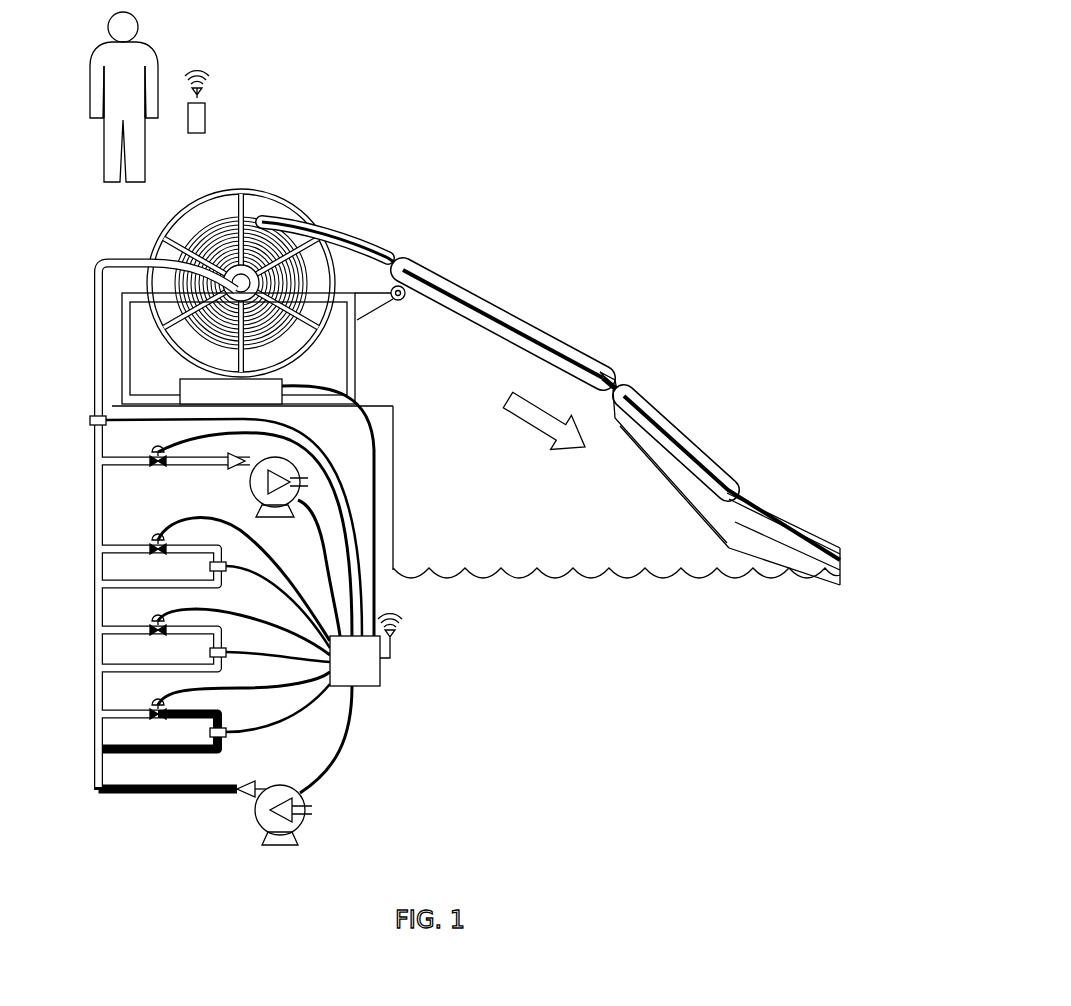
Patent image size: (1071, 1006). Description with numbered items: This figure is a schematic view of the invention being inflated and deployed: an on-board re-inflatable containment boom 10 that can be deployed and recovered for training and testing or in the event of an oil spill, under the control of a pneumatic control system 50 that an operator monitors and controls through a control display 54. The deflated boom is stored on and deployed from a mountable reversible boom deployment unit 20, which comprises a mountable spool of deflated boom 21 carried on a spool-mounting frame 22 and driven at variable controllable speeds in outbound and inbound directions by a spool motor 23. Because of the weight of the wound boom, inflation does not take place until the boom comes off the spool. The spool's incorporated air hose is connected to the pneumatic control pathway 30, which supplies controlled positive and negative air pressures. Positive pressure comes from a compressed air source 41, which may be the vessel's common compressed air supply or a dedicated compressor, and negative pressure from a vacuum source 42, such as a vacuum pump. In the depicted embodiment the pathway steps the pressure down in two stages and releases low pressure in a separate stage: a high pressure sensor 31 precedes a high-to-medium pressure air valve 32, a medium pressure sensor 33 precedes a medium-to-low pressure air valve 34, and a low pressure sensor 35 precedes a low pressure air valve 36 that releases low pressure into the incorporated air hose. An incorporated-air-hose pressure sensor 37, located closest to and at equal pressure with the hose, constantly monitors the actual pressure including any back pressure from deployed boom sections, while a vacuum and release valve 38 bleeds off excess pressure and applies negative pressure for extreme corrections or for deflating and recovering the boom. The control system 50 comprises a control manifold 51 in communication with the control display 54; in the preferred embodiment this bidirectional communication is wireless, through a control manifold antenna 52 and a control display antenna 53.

The re-inflatable containment boom 10 is at (553, 280).
The reversible boom deployment unit 20 is at (322, 157).
The spool of deflated boom 21 is at (162, 340).
The spool-mounting frame 22 is at (130, 390).
The spool motor 23 is at (231, 391).
The pneumatic control pathway 30 is at (53, 597).
The high pressure sensor 31 is at (210, 732).
The high-to-medium pressure air valve 32 is at (156, 719).
The medium pressure sensor 33 is at (210, 652).
The medium-to-low pressure air valve 34 is at (156, 635).
The low pressure sensor 35 is at (210, 566).
The low pressure air valve 36 is at (156, 554).
The incorporated-air-hose pressure sensor 37 is at (90, 421).
The vacuum and release valve 38 is at (156, 466).
The compressed air source 41 is at (256, 816).
The vacuum source 42 is at (250, 488).
The pneumatic control system 50 is at (428, 670).
The control manifold 51 is at (331, 536).
The control manifold antenna 52 is at (397, 632).
The control display antenna 53 is at (204, 88).
The control display 54 is at (198, 117).